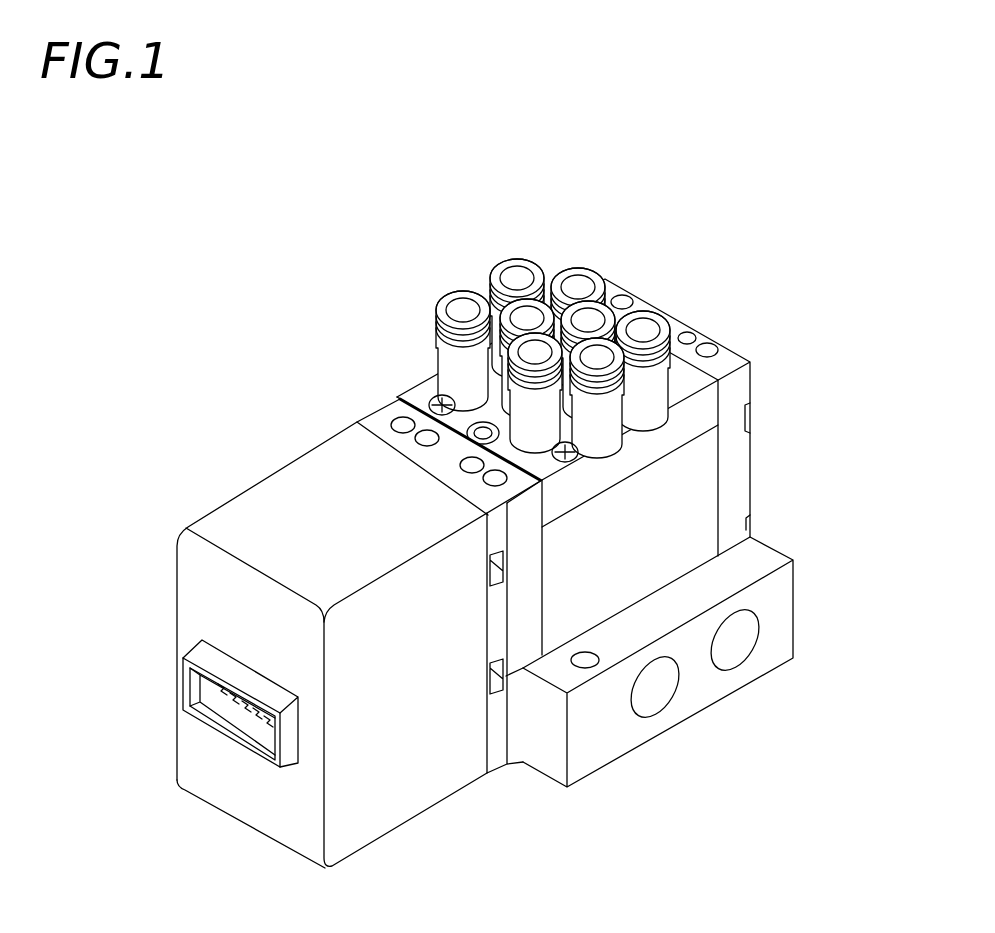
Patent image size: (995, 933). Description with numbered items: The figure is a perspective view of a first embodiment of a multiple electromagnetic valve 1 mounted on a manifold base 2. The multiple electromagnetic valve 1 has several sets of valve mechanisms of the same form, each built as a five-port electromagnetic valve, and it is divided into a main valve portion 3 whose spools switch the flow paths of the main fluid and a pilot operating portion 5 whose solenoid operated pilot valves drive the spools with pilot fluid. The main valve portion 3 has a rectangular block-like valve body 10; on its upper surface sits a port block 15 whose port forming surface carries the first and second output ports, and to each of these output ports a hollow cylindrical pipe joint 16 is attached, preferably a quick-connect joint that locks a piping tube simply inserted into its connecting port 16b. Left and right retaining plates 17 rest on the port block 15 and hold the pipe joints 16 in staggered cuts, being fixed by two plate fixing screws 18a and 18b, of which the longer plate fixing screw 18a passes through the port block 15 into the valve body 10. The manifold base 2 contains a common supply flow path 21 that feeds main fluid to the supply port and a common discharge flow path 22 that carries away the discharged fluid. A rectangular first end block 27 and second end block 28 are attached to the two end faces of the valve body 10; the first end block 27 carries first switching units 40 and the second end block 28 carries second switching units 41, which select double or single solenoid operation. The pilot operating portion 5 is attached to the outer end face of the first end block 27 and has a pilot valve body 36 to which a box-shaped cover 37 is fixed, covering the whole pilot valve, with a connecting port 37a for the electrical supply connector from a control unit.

The multiple electromagnetic valve 1 is at (303, 273).
The manifold base 2 is at (777, 603).
The main valve portion 3 is at (426, 212).
The pilot operating portion 5 is at (178, 439).
The valve body 10 is at (693, 513).
The port block 15 is at (705, 417).
The pipe joint 16 is at (577, 265).
The connecting port 16b is at (588, 283).
The retaining plate 17 is at (418, 397).
The plate fixing screw 18a is at (567, 455).
The plate fixing screw 18b is at (430, 398).
The common supply flow path 21 is at (652, 697).
The common discharge flow path 22 is at (733, 650).
The first end block 27 is at (515, 643).
The second end block 28 is at (738, 462).
The pilot valve body 36 is at (360, 430).
The cover 37 is at (197, 603).
The connecting port 37a is at (212, 717).
The first switching unit 40 is at (427, 442).
The second switching unit 41 is at (716, 348).